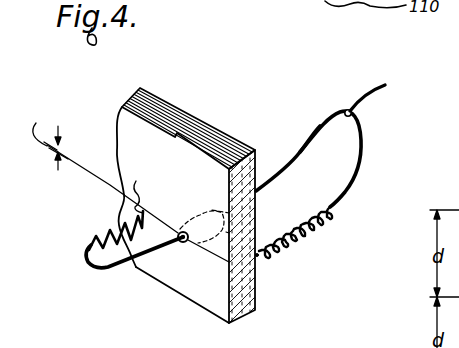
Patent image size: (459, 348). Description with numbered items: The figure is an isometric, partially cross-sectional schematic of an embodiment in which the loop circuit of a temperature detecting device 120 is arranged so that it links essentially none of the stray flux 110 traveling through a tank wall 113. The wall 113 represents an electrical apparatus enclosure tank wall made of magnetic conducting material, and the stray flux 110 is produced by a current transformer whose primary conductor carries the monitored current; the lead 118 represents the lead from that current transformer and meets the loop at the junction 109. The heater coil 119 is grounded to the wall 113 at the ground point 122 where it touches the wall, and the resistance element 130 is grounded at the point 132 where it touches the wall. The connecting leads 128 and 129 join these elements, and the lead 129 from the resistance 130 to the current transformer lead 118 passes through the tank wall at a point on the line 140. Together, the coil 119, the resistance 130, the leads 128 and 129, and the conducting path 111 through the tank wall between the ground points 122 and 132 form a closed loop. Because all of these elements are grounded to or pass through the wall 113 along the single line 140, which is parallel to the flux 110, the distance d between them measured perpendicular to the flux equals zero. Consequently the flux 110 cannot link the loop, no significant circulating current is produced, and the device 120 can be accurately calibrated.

The tie point 109 is at (346, 111).
The stray flux 110 is at (223, 129).
The conducting path 111 is at (184, 210).
The tank wall 113 is at (219, 317).
The lead 118 is at (361, 109).
The heater coil 119 is at (315, 230).
The temperature detecting device 120 is at (168, 258).
The ground point 122 is at (259, 255).
The connecting lead 128 is at (360, 176).
The connecting lead 129 is at (313, 149).
The resistance element 130 is at (97, 232).
The ground point 132 is at (139, 187).
The line 140 is at (104, 182).